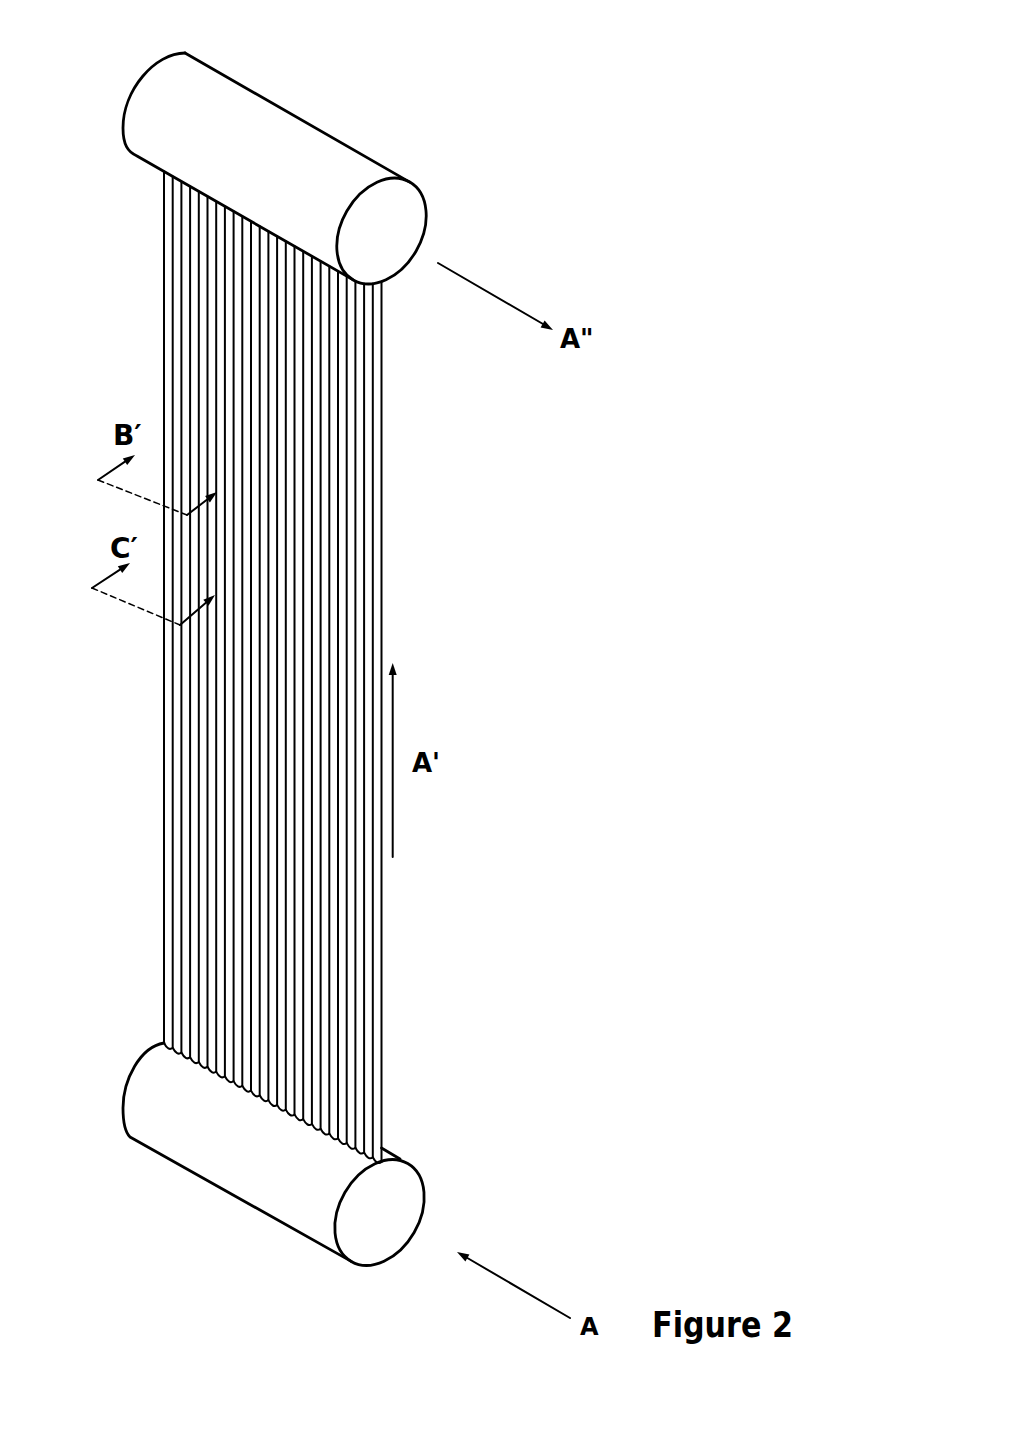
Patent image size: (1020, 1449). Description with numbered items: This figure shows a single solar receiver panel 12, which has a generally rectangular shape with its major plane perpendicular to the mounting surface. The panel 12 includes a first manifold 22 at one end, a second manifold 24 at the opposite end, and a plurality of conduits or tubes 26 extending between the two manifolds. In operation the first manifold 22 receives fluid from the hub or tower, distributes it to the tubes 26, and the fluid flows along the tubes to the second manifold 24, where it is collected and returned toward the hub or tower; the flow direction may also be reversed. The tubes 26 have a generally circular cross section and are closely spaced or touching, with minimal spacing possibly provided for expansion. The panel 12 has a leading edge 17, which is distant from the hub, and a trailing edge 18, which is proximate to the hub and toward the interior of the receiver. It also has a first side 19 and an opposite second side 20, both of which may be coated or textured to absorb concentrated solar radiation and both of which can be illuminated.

The receiver panel 12 is at (385, 56).
The second side 20 is at (377, 151).
The first manifold 22 is at (243, 1205).
The second manifold 24 is at (283, 106).
The tubes 26 is at (148, 769).
The leading edge 17 is at (164, 908).
The trailing edge 18 is at (382, 923).
The first side 19 is at (208, 1002).